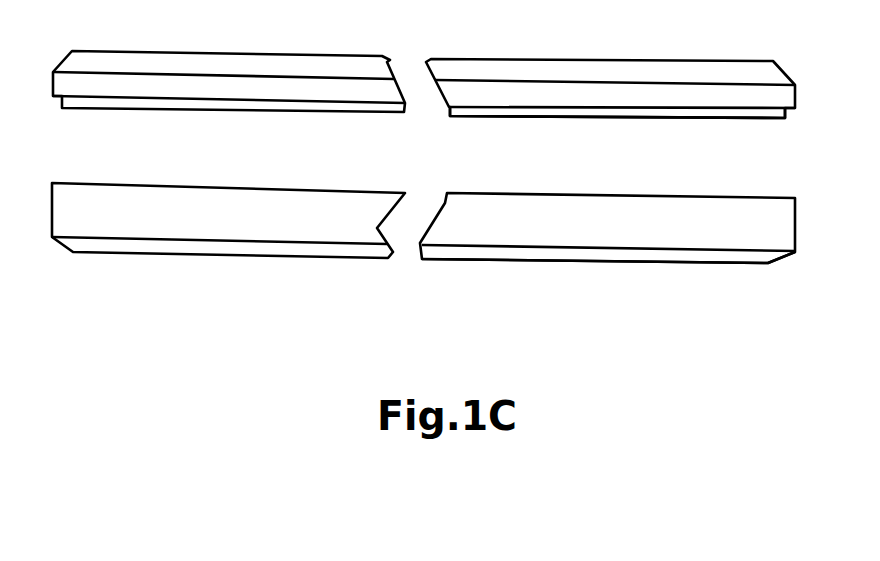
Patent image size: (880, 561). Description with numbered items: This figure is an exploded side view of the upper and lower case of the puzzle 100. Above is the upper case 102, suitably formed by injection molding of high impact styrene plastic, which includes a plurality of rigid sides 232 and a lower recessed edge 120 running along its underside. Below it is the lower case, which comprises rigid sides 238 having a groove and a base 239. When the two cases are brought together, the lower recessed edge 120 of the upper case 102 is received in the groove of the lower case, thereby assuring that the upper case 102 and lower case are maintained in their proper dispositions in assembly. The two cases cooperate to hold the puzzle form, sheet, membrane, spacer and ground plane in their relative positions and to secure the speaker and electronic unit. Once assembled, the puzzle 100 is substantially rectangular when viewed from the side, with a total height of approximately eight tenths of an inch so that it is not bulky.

The puzzle 100 is at (118, 134).
The upper case 102 is at (228, 63).
The lower recessed edge 120 is at (682, 115).
The rigid sides 232 is at (550, 93).
The rigid sides 238 is at (530, 223).
The base 239 is at (680, 257).